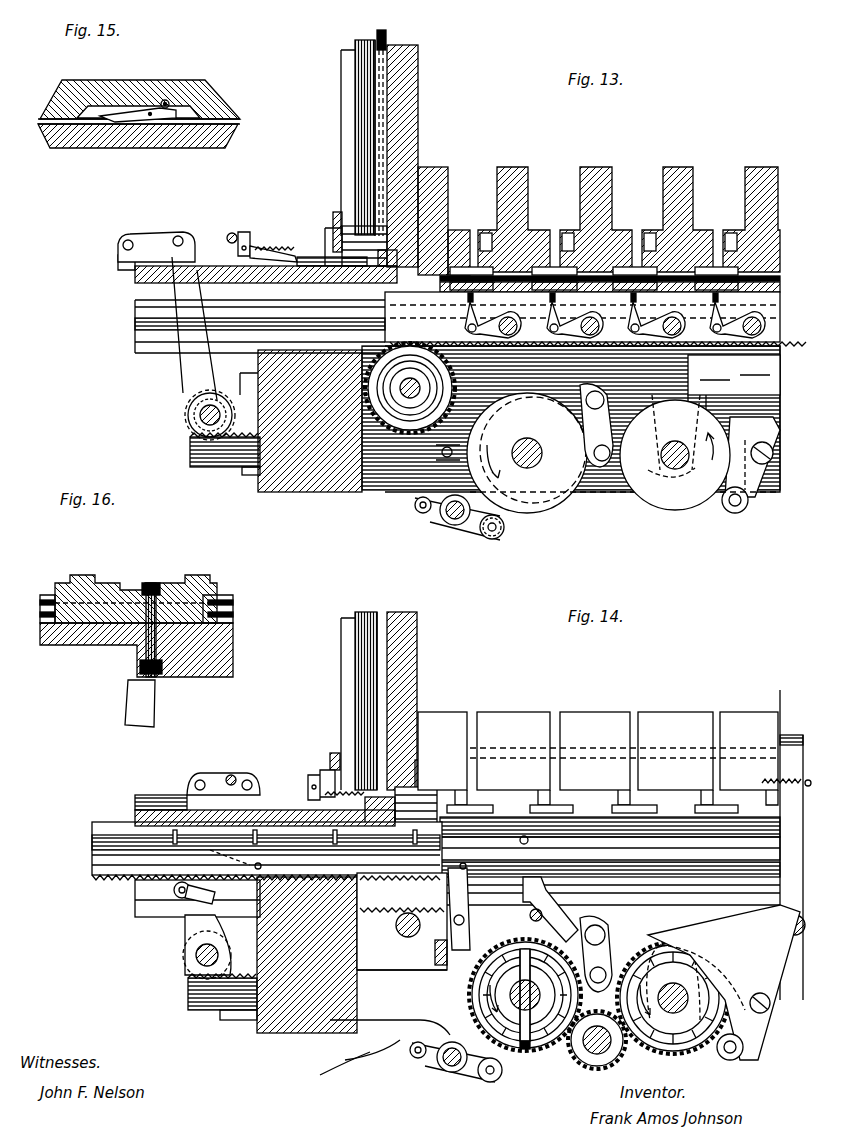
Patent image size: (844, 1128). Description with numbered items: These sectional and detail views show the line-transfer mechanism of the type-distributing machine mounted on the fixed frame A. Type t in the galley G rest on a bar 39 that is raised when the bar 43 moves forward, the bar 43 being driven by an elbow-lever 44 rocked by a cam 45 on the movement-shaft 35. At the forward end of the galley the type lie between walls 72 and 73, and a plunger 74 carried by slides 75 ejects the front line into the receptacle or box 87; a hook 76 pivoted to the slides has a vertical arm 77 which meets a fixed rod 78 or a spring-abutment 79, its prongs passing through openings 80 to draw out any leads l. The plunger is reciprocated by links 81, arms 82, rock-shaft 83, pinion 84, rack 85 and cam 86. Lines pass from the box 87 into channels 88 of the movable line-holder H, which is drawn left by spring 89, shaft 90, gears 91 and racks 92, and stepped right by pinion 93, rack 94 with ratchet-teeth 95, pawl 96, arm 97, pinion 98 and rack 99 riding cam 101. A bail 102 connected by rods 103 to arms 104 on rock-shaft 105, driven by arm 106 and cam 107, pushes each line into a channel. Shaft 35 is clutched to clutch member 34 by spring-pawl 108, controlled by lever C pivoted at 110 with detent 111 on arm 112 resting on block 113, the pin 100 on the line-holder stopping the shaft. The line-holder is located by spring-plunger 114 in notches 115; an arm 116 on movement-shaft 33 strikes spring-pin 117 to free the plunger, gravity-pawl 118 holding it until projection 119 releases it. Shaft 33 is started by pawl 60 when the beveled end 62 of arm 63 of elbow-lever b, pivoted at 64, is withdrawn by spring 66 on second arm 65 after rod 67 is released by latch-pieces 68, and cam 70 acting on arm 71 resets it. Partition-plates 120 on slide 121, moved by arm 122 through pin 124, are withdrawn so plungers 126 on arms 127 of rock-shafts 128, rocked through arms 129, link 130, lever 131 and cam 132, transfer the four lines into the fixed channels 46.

In FIG. 13, the movement-shaft 33 is at (665, 462).
In FIG. 14, the movement-shaft 33 is at (690, 960).
In FIG. 14, the clutch member 34 is at (590, 1068).
In FIG. 13, the movement-shaft 35 is at (530, 445).
In FIG. 14, the movement-shaft 35 is at (540, 1005).
In FIG. 13, the bar 39 is at (365, 112).
In FIG. 14, the bar 39 is at (368, 660).
In FIG. 13, the bar 43 is at (386, 38).
In FIG. 13, the elbow-lever 44 is at (490, 410).
In FIG. 13, the cam 45 is at (525, 514).
In FIG. 13, the fixed vertical channels 46 is at (690, 265).
In FIG. 14, the fixed vertical channels 46 is at (690, 812).
In FIG. 14, the pawl 60 is at (660, 1048).
In FIG. 14, the beveled end 62 is at (745, 1055).
In FIG. 14, the arm 63 is at (772, 1010).
In FIG. 14, the pivot 64 is at (795, 935).
In FIG. 14, the second arm 65 is at (782, 880).
In FIG. 14, the spring 66 is at (783, 785).
In FIG. 14, the rod 67 is at (790, 775).
In FIG. 14, the latch-pieces 68 is at (715, 745).
In FIG. 14, the cam or arm 70 is at (680, 930).
In FIG. 14, the arm 71 is at (710, 940).
In FIG. 13, the wall 72 is at (405, 122).
In FIG. 14, the wall 72 is at (402, 735).
In FIG. 13, the wall 73 is at (330, 225).
In FIG. 14, the wall 73 is at (322, 775).
In FIG. 13, the plunger 74 is at (262, 246).
In FIG. 14, the plunger 74 is at (410, 768).
In FIG. 13, the slides 75 is at (124, 266).
In FIG. 14, the slides 75 is at (278, 800).
In FIG. 13, the hook 76 is at (288, 250).
In FIG. 13, the vertical arm 77 is at (244, 232).
In FIG. 13, the fixed rod 78 is at (228, 234).
In FIG. 13, the spring-abutment 79 is at (336, 212).
In FIG. 14, the spring-abutment 79 is at (332, 755).
In FIG. 13, the openings 80 is at (325, 262).
In FIG. 13, the links 81 is at (150, 235).
In FIG. 13, the arms 82 is at (185, 362).
In FIG. 13, the rock-shaft 83 is at (198, 416).
In FIG. 13, the pinion 84 is at (190, 432).
In FIG. 13, the rack 85 is at (235, 458).
In FIG. 13, the cam 86 is at (575, 500).
In FIG. 13, the receptacle or box 87 is at (445, 226).
In FIG. 14, the receptacle or box 87 is at (460, 792).
In FIG. 13, the channels 88 is at (782, 300).
In FIG. 16, the channels 88 is at (175, 582).
In FIG. 14, the channels 88 is at (210, 850).
In FIG. 13, the spring 89 is at (395, 455).
In FIG. 13, the shaft 90 is at (430, 455).
In FIG. 14, the shaft 90 is at (415, 922).
In FIG. 13, the gears 91 is at (395, 440).
In FIG. 14, the gears 91 is at (400, 912).
In FIG. 14, the racks 92 is at (110, 870).
In FIG. 14, the pinion 93 is at (375, 1035).
In FIG. 14, the rack 94 is at (425, 898).
In FIG. 14, the ratchet-teeth 95 is at (185, 915).
In FIG. 14, the pawl 96 is at (205, 852).
In FIG. 14, the arm 97 is at (185, 940).
In FIG. 14, the pinion 98 is at (188, 985).
In FIG. 14, the rack 99 is at (210, 1010).
In FIG. 14, the pin or shoulder 100 is at (262, 866).
In FIG. 14, the cam 101 is at (510, 1048).
In FIG. 13, the bar or bail 102 is at (440, 200).
In FIG. 14, the bar or bail 102 is at (455, 760).
In FIG. 14, the rods 103 is at (395, 1047).
In FIG. 13, the arms 104 is at (435, 518).
In FIG. 14, the arms 104 is at (432, 1062).
In FIG. 13, the rock-shaft 105 is at (455, 527).
In FIG. 14, the rock-shaft 105 is at (448, 1074).
In FIG. 13, the arm 106 is at (478, 530).
In FIG. 14, the arm 106 is at (478, 1072).
In FIG. 14, the cam 107 is at (600, 925).
In FIG. 14, the spring-pawl 108 is at (528, 1050).
In FIG. 14, the pivot 110 is at (530, 915).
In FIG. 14, the detent 111 is at (572, 895).
In FIG. 14, the arm 112 is at (468, 915).
In FIG. 14, the fixed block 113 is at (348, 1072).
In FIG. 15, the spring-plunger 114 is at (170, 100).
In FIG. 16, the spring-plunger 114 is at (140, 630).
In FIG. 16, the notch 115 is at (190, 655).
In FIG. 13, the arm 116 is at (740, 395).
In FIG. 16, the arm 116 is at (156, 715).
In FIG. 13, the spring-pin 117 is at (700, 395).
In FIG. 16, the spring-pin 117 is at (140, 665).
In FIG. 15, the gravity-pawl 118 is at (131, 123).
In FIG. 15, the projection 119 is at (68, 122).
In FIG. 13, the projection 119 is at (355, 318).
In FIG. 13, the partition-plates 120 is at (745, 262).
In FIG. 13, the slide 121 is at (750, 278).
In FIG. 14, the slide 121 is at (700, 835).
In FIG. 14, the arm 122 is at (590, 840).
In FIG. 14, the pin 124 is at (540, 843).
In FIG. 13, the plungers 126 is at (712, 303).
In FIG. 14, the plungers 126 is at (170, 845).
In FIG. 13, the arms 127 is at (470, 325).
In FIG. 13, the rock-shafts 128 is at (612, 310).
In FIG. 13, the arms 129 is at (536, 340).
In FIG. 13, the connecting-link 130 is at (618, 340).
In FIG. 13, the lever 131 is at (775, 422).
In FIG. 13, the cam 132 is at (690, 500).
In FIG. 16, the fixed frame A is at (225, 655).
In FIG. 14, the lever c C is at (548, 945).
In FIG. 14, the galley G is at (348, 636).
In FIG. 16, the movable line-holder H is at (210, 590).
In FIG. 14, the movable line-holder H is at (92, 826).
In FIG. 14, the elbow-lever b is at (792, 915).
In FIG. 13, the type t is at (418, 165).
In FIG. 14, the type t is at (568, 800).
In FIG. 13, the leads l is at (430, 180).